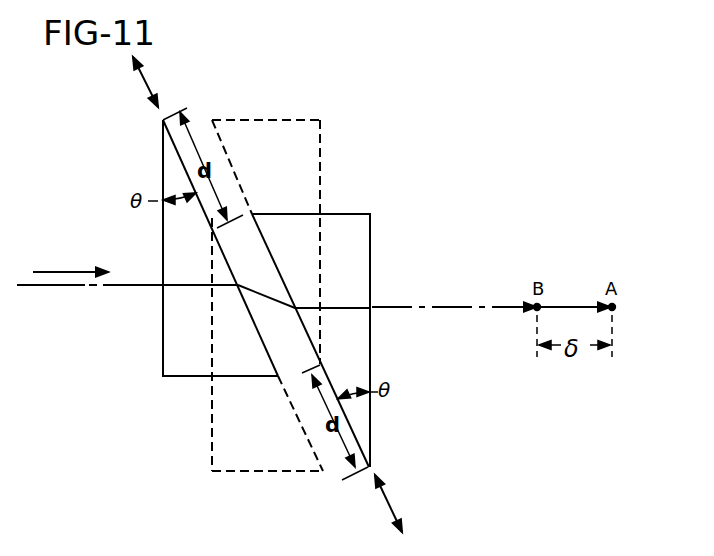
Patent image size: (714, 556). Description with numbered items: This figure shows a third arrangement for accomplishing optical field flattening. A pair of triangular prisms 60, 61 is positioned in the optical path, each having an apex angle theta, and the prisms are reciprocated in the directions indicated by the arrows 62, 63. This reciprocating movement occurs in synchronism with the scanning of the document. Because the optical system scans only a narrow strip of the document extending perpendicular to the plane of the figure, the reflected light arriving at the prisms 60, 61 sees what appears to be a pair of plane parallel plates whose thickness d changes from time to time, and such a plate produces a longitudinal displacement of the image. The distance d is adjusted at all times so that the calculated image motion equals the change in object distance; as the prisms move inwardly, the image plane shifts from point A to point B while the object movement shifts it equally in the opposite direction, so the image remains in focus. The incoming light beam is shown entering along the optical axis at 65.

The triangular prism 60 is at (177, 348).
The triangular prism 61 is at (356, 240).
The arrow 62 is at (147, 83).
The arrow 63 is at (390, 503).
The incident light beam 65 is at (132, 287).